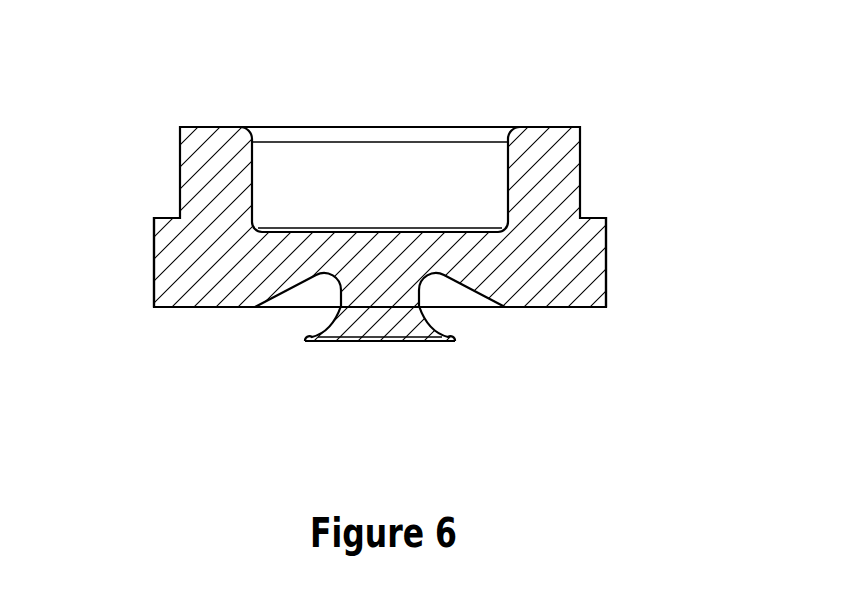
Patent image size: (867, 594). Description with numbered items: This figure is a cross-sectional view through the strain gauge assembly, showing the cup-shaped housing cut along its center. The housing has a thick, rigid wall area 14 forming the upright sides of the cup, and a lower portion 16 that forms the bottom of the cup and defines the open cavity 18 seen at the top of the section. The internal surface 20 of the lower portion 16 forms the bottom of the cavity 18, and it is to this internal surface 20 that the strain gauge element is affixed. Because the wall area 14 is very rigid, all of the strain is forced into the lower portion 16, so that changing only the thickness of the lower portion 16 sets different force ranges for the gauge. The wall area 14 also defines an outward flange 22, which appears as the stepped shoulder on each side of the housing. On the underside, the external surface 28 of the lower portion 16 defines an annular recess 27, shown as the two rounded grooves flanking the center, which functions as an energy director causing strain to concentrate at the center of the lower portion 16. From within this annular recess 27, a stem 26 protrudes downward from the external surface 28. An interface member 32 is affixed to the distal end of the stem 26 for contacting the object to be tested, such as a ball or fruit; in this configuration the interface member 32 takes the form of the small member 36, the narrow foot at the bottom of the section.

The wall area 14 is at (595, 146).
The lower portion 16 is at (495, 267).
The cavity 18 is at (380, 179).
The internal surface 20 is at (414, 221).
The flange 22 is at (618, 231).
The stem 26 is at (326, 296).
The annular recess 27 is at (485, 304).
The external surface 28 is at (179, 318).
The interface member 32 is at (362, 346).
The small member 36 is at (362, 346).